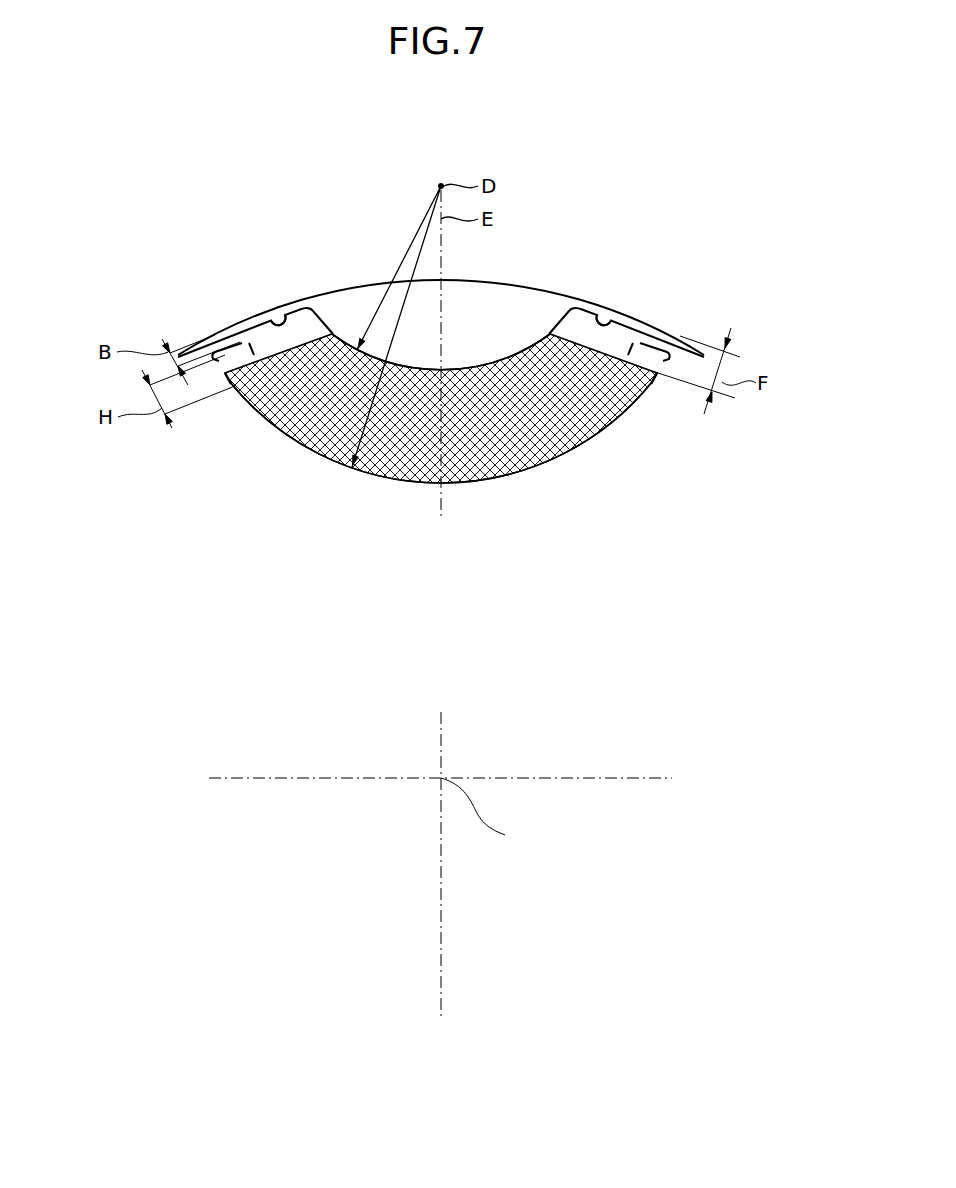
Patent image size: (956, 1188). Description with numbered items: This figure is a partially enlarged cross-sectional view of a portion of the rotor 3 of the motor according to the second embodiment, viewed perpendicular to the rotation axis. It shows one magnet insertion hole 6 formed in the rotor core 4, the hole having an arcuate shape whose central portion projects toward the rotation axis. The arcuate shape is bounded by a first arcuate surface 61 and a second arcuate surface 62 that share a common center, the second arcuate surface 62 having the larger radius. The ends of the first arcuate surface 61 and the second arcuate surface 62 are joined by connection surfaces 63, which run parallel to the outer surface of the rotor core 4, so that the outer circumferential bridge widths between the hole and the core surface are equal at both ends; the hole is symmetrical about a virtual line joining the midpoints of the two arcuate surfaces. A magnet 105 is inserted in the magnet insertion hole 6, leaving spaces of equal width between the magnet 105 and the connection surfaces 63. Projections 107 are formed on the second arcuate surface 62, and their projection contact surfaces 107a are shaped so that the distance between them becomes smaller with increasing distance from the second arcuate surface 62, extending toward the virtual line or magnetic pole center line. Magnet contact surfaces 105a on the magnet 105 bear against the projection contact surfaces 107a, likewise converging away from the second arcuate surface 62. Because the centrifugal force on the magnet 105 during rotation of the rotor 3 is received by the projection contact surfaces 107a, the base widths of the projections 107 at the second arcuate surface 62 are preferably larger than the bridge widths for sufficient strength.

The rotor 3 is at (596, 162).
The rotor core 4 is at (358, 303).
The magnet insertion hole 6 is at (442, 367).
The first arcuate surface 61 is at (512, 366).
The second arcuate surface 62 is at (490, 484).
The connection surface 63 is at (281, 321).
The magnet 105 is at (461, 399).
The magnet contact surface 105a is at (250, 348).
The projection 107 is at (240, 357).
The projection contact surface 107a is at (232, 380).